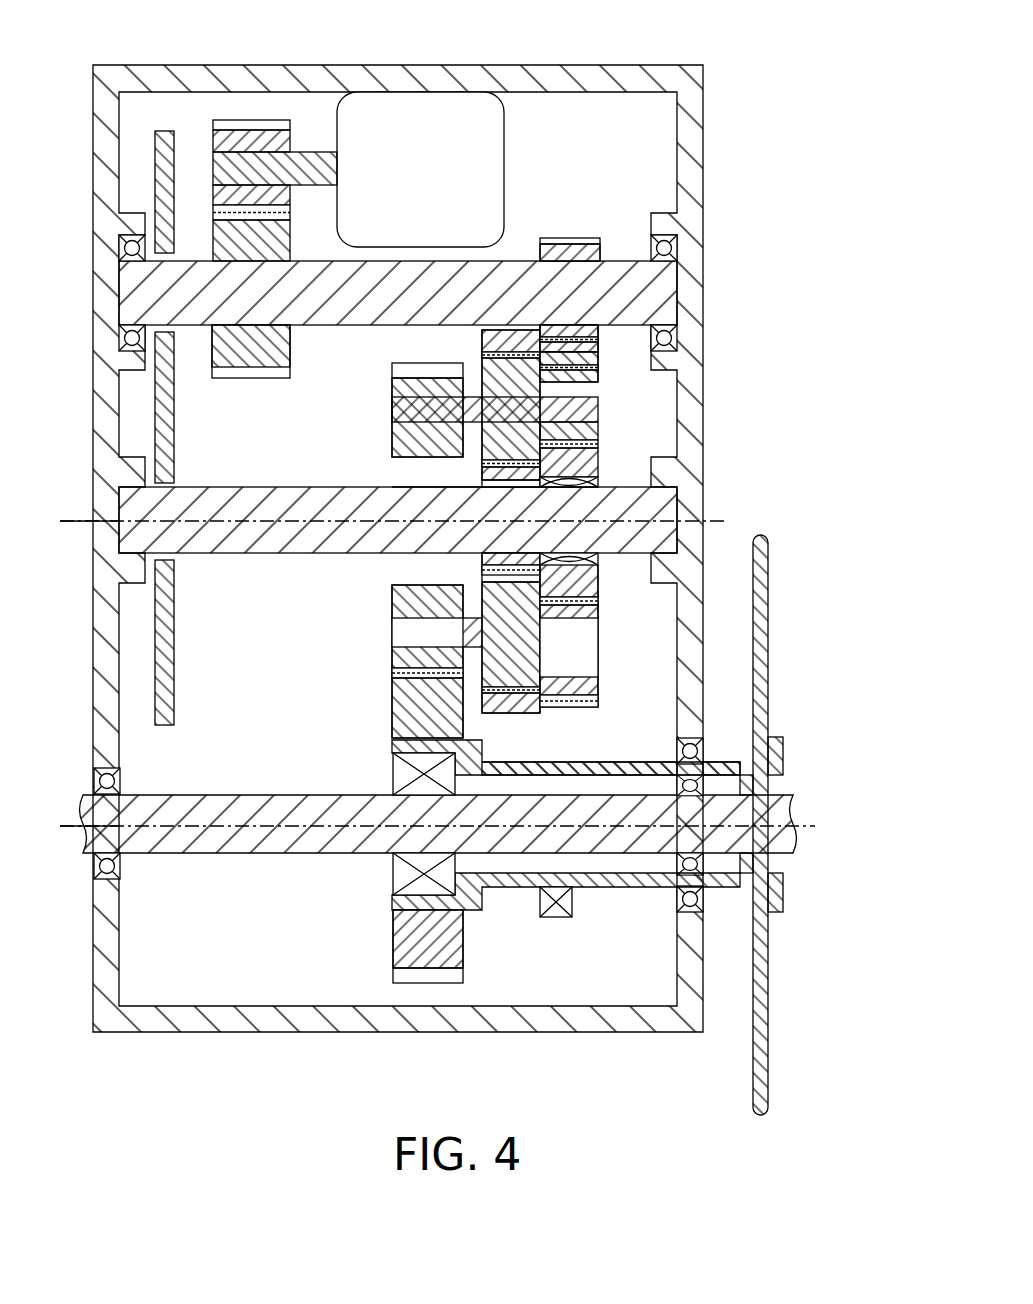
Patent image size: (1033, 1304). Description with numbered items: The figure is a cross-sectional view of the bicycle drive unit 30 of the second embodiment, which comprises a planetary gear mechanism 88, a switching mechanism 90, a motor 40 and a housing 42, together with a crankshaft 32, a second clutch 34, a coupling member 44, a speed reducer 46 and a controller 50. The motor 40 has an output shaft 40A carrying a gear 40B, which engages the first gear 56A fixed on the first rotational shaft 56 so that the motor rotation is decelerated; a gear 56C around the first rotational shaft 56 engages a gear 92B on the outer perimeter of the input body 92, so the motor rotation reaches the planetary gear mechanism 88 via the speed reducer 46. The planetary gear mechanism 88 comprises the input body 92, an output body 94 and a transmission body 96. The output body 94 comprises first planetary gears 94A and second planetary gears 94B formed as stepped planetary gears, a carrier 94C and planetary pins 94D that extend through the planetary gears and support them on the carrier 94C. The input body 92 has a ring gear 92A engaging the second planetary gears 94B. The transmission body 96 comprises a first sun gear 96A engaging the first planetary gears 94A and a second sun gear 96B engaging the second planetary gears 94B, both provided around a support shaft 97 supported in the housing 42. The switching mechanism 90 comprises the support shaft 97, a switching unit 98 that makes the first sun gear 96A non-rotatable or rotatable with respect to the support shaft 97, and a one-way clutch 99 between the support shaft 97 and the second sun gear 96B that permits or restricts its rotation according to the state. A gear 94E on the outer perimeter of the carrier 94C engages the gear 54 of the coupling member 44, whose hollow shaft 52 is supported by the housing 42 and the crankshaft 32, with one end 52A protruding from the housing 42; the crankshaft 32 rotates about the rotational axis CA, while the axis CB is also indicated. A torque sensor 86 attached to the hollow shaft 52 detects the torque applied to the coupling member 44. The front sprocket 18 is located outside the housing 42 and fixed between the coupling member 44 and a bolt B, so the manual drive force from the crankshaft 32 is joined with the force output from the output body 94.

The drive unit 30 is at (752, 58).
The housing 42 is at (704, 118).
The motor 40 is at (505, 140).
The output shaft 40A is at (322, 152).
The gear 40B is at (215, 125).
The first rotational shaft 56 is at (340, 326).
The first gear 56A is at (292, 226).
The gear 56C is at (582, 246).
The speed reducer 46 is at (208, 246).
The controller 50 is at (175, 424).
The input body 92 is at (481, 325).
The ring gear 92A is at (598, 702).
The gear 92B is at (600, 341).
The output body 94 is at (500, 516).
The first planetary gears 94A is at (600, 674).
The second planetary gears 94B is at (482, 352).
The carrier 94C is at (393, 432).
The planetary pins 94D is at (600, 632).
The gear 94E is at (393, 673).
The planetary gear mechanism 88 is at (366, 414).
The transmission body 96 is at (482, 470).
The first sun gear 96A is at (482, 570).
The second sun gear 96B is at (600, 600).
The switching mechanism 90 is at (600, 468).
The switching unit 98 is at (482, 487).
The one-way clutch 99 is at (600, 487).
The support shaft 97 is at (266, 554).
The second axis CB is at (80, 528).
The rotational axis CA is at (78, 855).
The second clutch 34 is at (392, 768).
The hollow shaft 52 is at (548, 762).
The one end 52A is at (732, 762).
The coupling member 44 is at (672, 760).
The gear 54 is at (393, 972).
The torque sensor 86 is at (556, 918).
The front sprocket 18 is at (769, 598).
The bolt B is at (780, 740).
The crankshaft 32 is at (793, 853).